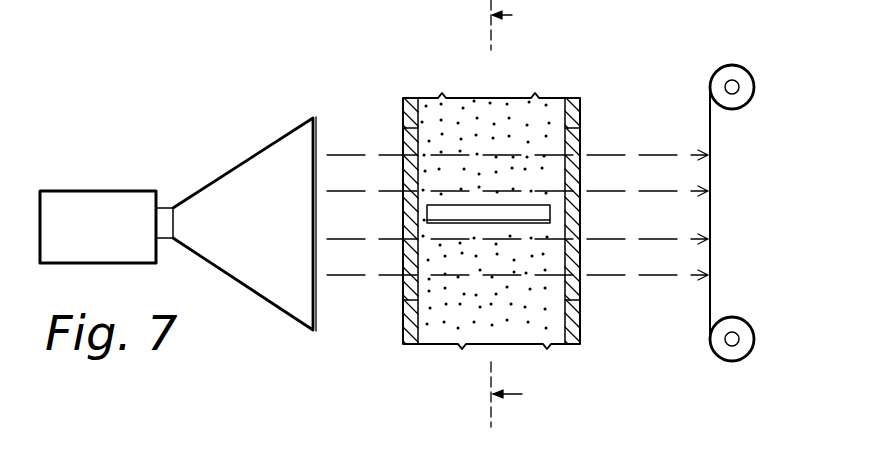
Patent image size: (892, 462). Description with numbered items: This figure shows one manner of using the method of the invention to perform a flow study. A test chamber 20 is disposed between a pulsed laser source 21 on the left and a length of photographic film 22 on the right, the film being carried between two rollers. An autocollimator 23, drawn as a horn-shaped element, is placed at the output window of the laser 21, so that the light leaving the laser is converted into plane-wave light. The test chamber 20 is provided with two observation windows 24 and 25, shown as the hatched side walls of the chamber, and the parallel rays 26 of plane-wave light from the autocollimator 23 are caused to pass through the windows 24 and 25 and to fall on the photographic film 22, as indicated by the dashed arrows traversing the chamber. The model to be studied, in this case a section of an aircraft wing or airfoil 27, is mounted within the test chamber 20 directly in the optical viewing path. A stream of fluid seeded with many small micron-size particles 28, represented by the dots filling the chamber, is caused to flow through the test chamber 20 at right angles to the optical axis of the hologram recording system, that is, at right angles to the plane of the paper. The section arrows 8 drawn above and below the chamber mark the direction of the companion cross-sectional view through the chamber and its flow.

The test chamber 20 is at (493, 190).
The pulsed laser source 21 is at (110, 197).
The photographic film 22 is at (710, 212).
The autocollimator 23 is at (235, 180).
The observation window 24 is at (403, 288).
The observation window 25 is at (580, 288).
The parallel rays 26 is at (600, 239).
The airfoil 27 is at (447, 213).
The micron-size particles 28 is at (473, 110).
The section line 8- 8 is at (518, 213).